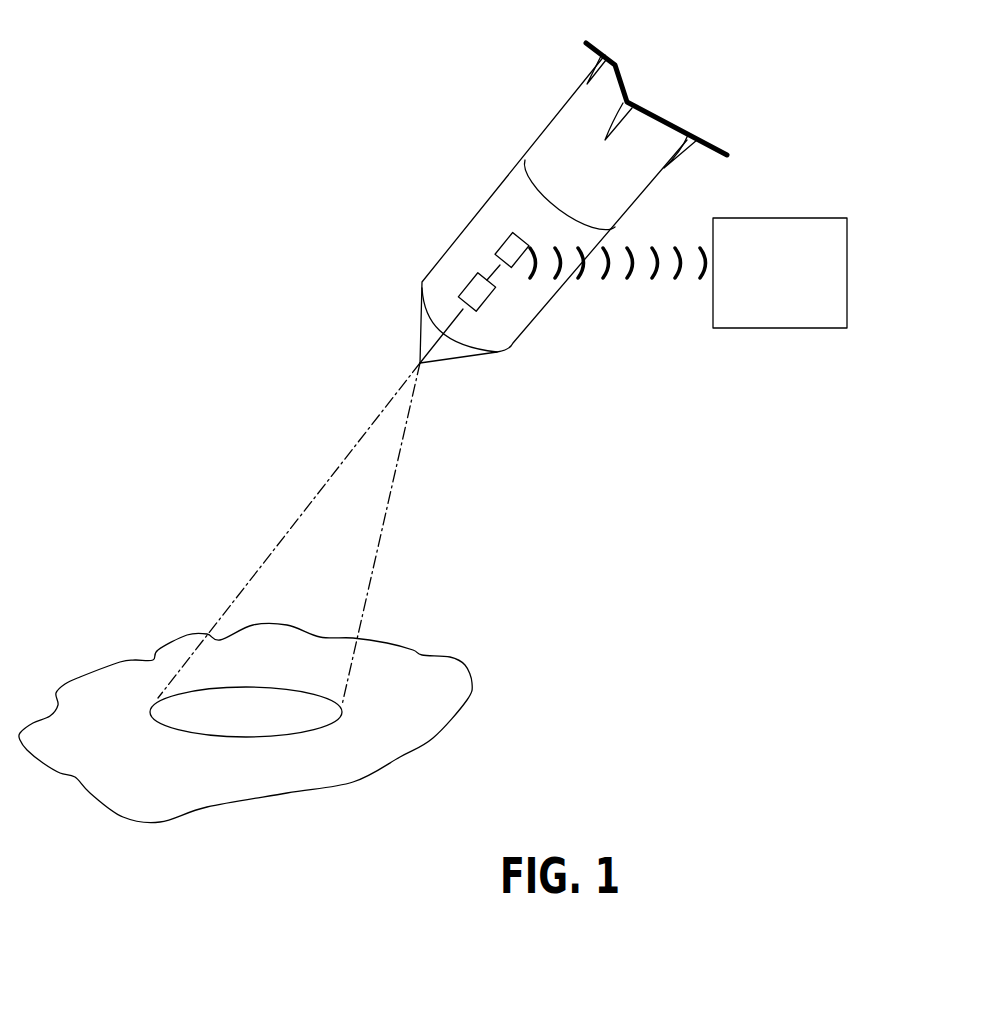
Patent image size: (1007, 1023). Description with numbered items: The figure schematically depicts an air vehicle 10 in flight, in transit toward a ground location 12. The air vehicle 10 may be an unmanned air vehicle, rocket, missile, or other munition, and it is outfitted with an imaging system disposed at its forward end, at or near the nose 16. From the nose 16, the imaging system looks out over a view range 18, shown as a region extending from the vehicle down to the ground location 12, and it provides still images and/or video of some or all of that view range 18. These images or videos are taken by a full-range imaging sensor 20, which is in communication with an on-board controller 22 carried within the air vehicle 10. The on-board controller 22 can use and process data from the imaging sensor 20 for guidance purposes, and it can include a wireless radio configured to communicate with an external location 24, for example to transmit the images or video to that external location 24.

The air vehicle 10 is at (707, 92).
The ground location 12 is at (253, 713).
The nose 16 is at (455, 350).
The view range 18 is at (303, 489).
The full-range imaging sensor 20 is at (478, 290).
The on-board controller 22 is at (508, 243).
The external location 24 is at (783, 302).